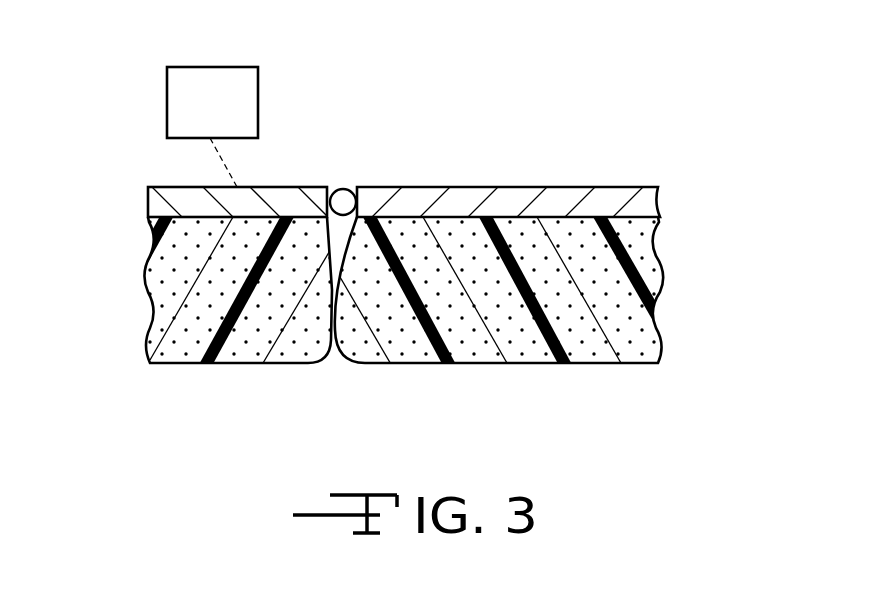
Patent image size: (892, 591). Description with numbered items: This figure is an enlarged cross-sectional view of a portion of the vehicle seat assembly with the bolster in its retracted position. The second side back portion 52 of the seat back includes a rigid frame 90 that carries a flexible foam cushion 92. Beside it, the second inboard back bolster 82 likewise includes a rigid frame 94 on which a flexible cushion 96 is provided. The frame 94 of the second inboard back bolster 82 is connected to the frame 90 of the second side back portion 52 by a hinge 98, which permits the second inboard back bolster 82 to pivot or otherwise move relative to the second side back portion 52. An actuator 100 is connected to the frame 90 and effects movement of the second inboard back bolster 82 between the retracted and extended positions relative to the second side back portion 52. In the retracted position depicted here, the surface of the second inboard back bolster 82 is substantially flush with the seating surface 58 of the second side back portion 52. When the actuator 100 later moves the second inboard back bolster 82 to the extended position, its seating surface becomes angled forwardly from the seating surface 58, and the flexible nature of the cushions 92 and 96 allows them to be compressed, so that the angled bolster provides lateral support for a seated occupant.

The actuator 100 is at (205, 66).
The rigid frame 94 is at (276, 198).
The hinge 98 is at (345, 187).
The rigid frame 90 is at (519, 195).
The second side back portion 52 is at (617, 237).
The second inboard back bolster 82 is at (228, 258).
The flexible cushion 96 is at (215, 323).
The flexible foam cushion 92 is at (653, 287).
The seating surface 58 is at (518, 363).